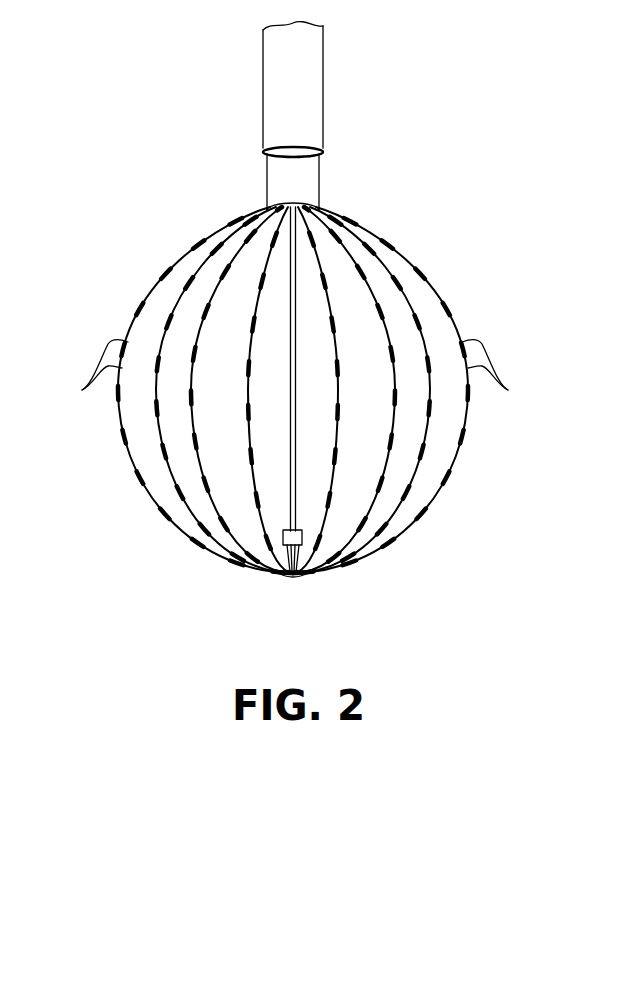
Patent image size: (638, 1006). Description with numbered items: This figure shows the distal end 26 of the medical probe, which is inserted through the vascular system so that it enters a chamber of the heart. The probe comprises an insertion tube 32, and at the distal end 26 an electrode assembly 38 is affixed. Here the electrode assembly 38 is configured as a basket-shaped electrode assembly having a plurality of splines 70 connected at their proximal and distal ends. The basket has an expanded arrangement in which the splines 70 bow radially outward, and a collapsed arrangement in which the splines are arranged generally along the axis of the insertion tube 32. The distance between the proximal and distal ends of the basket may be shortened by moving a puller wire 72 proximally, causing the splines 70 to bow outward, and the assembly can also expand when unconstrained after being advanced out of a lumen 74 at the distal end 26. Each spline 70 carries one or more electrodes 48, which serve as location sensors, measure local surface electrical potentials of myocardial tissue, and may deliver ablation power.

The distal end 26 is at (155, 157).
The insertion tube 32 is at (274, 99).
The lumen 74 is at (335, 193).
The electrode assembly 38 is at (385, 563).
The splines 70 is at (470, 421).
The puller wire 72 is at (293, 432).
The electrodes 48 is at (299, 373).